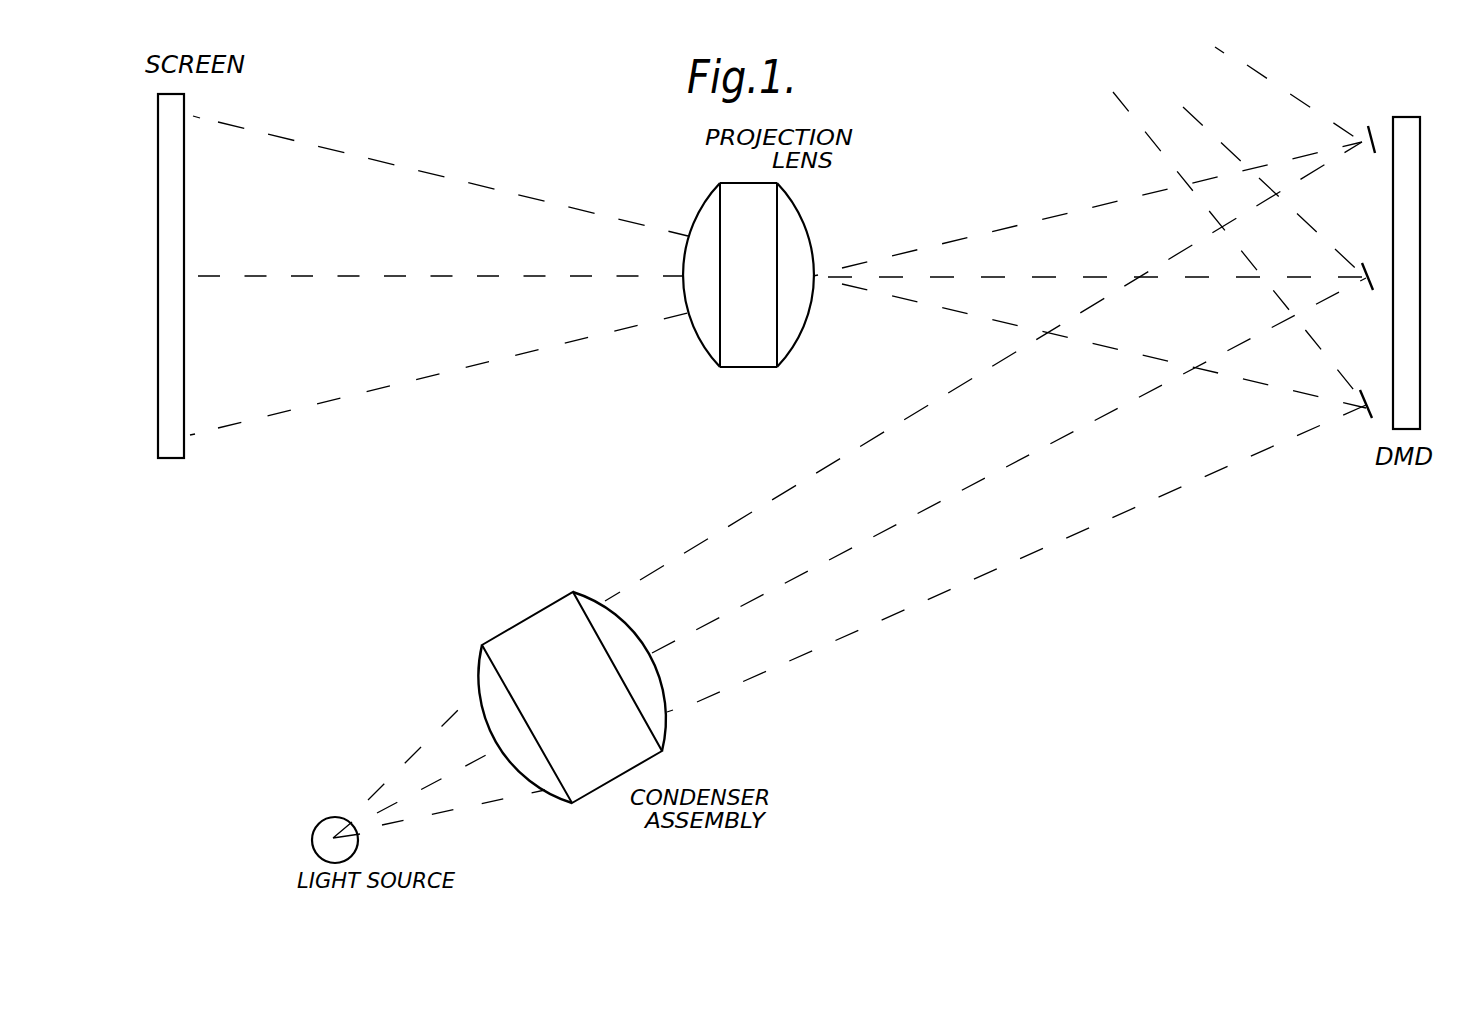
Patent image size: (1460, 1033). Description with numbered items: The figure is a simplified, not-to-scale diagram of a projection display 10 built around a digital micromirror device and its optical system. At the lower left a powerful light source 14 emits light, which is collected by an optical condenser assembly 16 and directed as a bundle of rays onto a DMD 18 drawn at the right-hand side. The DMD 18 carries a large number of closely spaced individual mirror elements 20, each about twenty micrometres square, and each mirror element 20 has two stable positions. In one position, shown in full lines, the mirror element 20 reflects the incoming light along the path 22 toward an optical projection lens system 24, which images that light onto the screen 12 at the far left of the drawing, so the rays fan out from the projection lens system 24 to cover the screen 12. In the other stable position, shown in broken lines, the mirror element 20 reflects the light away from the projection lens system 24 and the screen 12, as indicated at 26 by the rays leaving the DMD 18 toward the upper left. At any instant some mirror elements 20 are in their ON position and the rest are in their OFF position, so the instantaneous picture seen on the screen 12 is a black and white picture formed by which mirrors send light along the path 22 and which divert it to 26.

The projection display 10 is at (383, 593).
The screen 12 is at (173, 452).
The light source 14 is at (330, 826).
The optical condenser assembly 16 is at (555, 612).
The DMD 18 is at (1410, 125).
The mirror element 20 is at (1368, 128).
The path 22 is at (948, 244).
The optical projection lens system 24 is at (742, 353).
The light reflected away 26 is at (1190, 106).